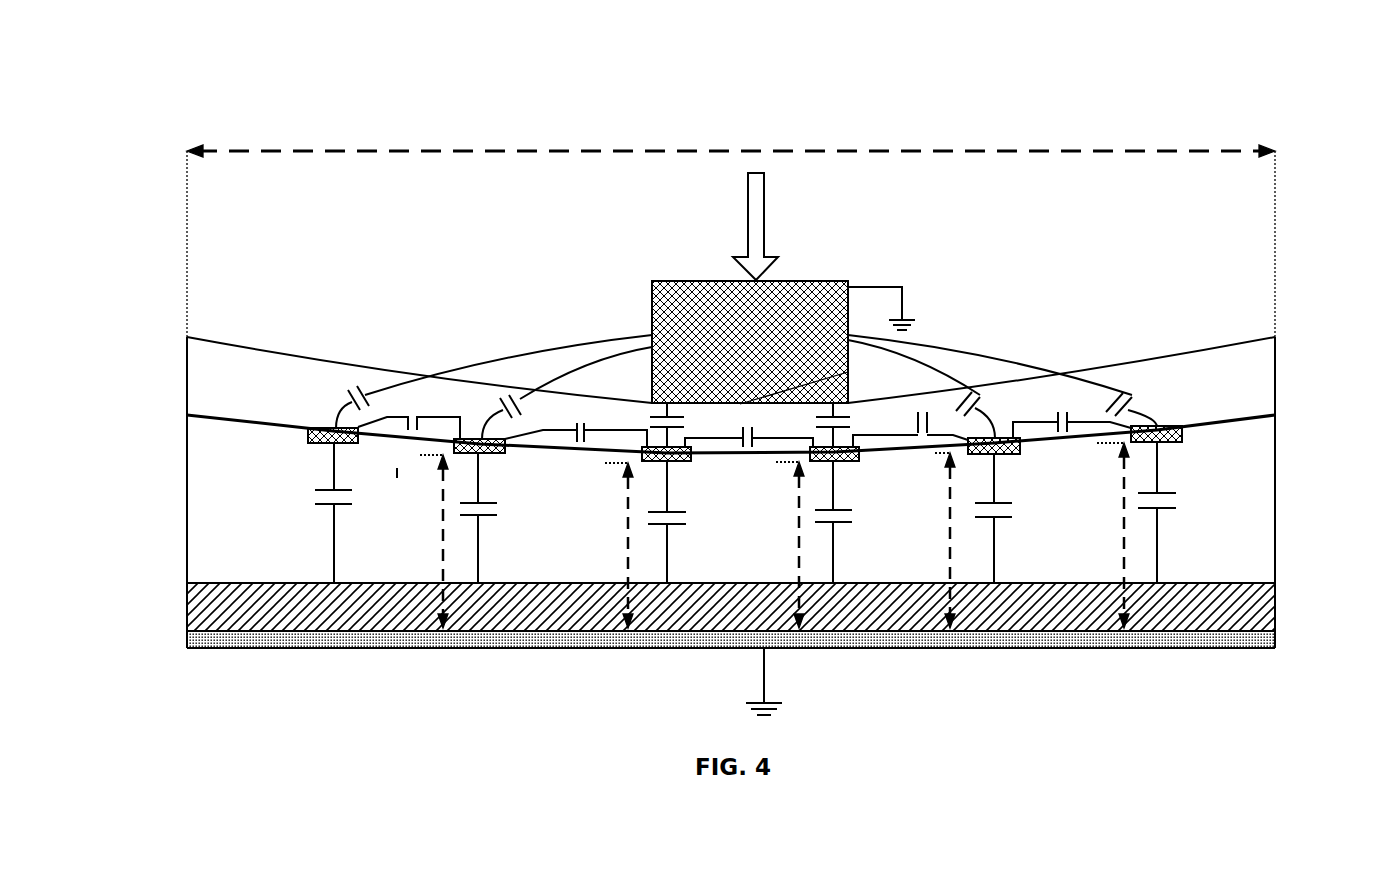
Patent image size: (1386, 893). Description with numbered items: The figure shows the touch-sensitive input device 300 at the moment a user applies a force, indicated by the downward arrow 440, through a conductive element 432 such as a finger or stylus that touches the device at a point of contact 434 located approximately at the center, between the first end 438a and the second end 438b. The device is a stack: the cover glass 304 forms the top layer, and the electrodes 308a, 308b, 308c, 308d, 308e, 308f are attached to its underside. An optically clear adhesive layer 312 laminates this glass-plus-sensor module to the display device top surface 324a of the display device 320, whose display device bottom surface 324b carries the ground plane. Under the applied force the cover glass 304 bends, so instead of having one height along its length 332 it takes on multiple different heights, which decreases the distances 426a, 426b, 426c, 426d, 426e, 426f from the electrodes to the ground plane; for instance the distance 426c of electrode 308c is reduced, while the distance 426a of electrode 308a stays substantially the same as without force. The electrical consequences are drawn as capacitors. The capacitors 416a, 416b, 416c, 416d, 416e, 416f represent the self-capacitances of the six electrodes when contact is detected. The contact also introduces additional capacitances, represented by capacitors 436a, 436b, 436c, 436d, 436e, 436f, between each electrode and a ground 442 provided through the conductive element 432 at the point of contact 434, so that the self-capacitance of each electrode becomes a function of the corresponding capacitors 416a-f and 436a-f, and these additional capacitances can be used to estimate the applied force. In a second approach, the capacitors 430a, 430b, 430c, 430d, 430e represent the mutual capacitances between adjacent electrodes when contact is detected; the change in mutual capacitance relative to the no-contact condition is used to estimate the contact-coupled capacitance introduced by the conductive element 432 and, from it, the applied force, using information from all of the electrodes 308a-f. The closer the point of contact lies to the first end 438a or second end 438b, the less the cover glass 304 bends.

The touch-sensitive input device 300 is at (151, 94).
The cover glass 304 is at (731, 394).
The electrode 308a is at (317, 428).
The electrode 308b is at (485, 455).
The electrode 308c is at (667, 462).
The electrode 308d is at (845, 462).
The electrode 308e is at (1000, 455).
The electrode 308f is at (1170, 443).
The optically clear adhesive layer 312 is at (220, 558).
The display device 320 is at (731, 607).
The display device top surface 324a is at (380, 635).
The display device bottom surface 324b is at (318, 648).
The length 332 is at (738, 151).
The capacitor 416a is at (355, 497).
The capacitor 416b is at (500, 510).
The capacitor 416c is at (688, 517).
The capacitor 416d is at (855, 514).
The capacitor 416e is at (1013, 510).
The capacitor 416f is at (1178, 502).
The distance 426a is at (292, 534).
The distance 426b is at (443, 566).
The distance 426c is at (628, 570).
The distance 426d is at (799, 570).
The distance 426e is at (950, 572).
The distance 426f is at (1124, 560).
The capacitor 430a is at (407, 416).
The capacitor 430b is at (565, 445).
The capacitor 430c is at (743, 450).
The capacitor 430d is at (916, 450).
The capacitor 430e is at (1060, 436).
The conductive element 432 is at (800, 281).
The point of contact 434 is at (850, 368).
The capacitor 436a is at (356, 390).
The capacitor 436b is at (509, 395).
The capacitor 436c is at (650, 415).
The capacitor 436d is at (852, 417).
The capacitor 436e is at (974, 392).
The capacitor 436f is at (1125, 393).
The first end 438a is at (187, 522).
The second end 438b is at (1275, 522).
The downward arrow 440 is at (764, 210).
The ground 442 is at (878, 287).